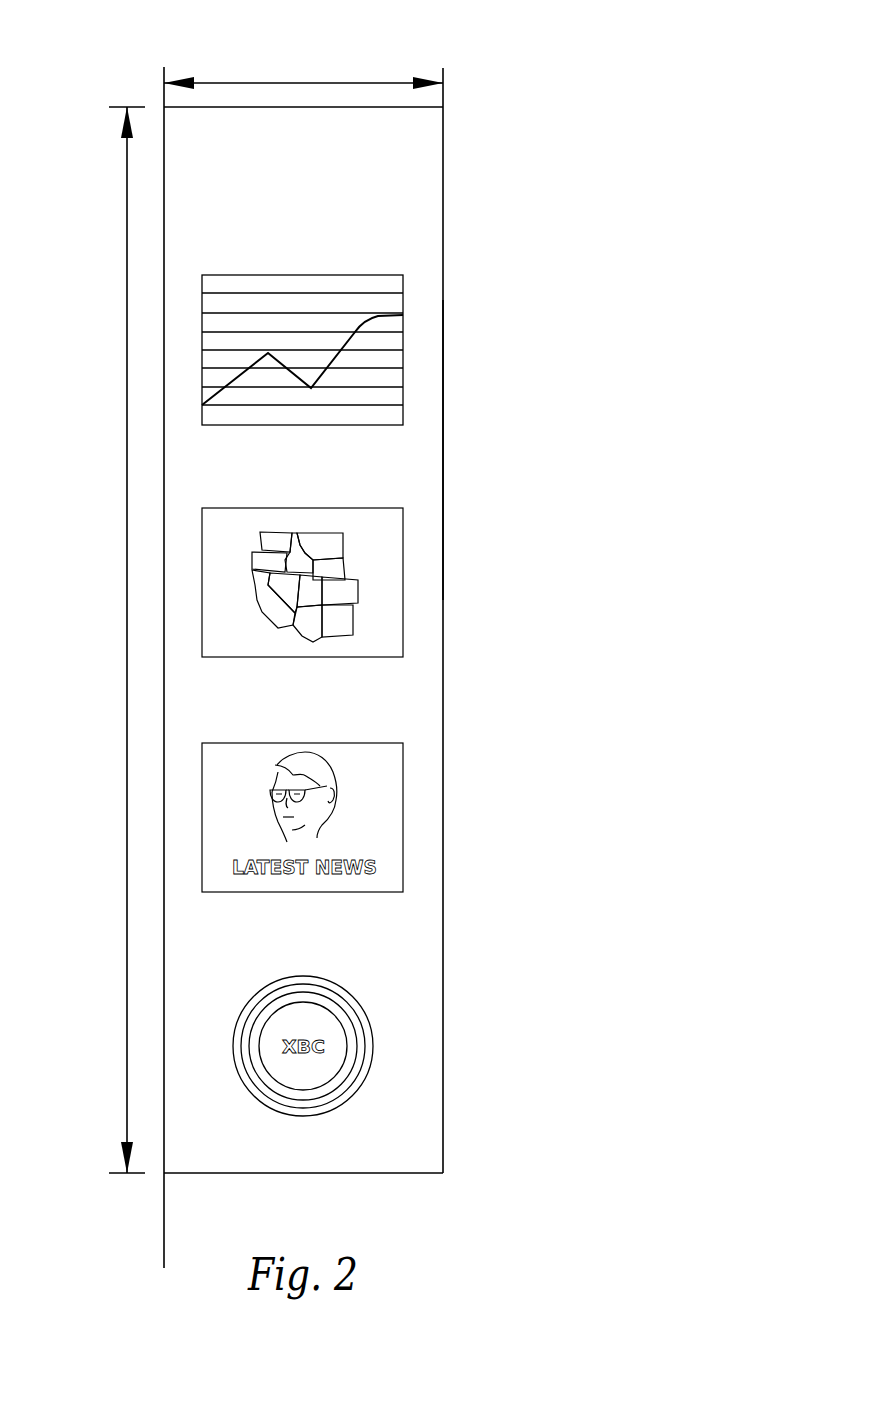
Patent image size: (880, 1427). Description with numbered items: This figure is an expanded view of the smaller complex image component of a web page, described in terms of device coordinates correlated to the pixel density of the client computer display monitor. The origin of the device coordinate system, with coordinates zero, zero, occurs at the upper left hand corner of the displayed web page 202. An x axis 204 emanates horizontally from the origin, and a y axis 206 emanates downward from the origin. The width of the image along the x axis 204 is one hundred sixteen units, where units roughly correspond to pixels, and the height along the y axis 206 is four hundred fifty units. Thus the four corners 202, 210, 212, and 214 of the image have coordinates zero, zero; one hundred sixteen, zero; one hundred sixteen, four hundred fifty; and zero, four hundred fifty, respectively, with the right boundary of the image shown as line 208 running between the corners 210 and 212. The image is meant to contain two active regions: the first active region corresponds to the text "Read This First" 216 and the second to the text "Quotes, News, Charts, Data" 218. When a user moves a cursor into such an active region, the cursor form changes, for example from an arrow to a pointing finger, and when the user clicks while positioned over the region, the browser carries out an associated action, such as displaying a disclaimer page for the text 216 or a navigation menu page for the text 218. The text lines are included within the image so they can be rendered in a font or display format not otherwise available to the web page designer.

The upper left hand corner of the displayed web page 202 is at (163, 105).
The x axis 204 is at (297, 82).
The y axis 206 is at (126, 462).
The right page boundary 208 is at (443, 440).
The corner 210 is at (445, 107).
The corner 212 is at (443, 1173).
The corner 214 is at (164, 1175).
The text "Read This First" 216 is at (228, 131).
The text "Quotes, News, Charts, Data" 218 is at (222, 198).